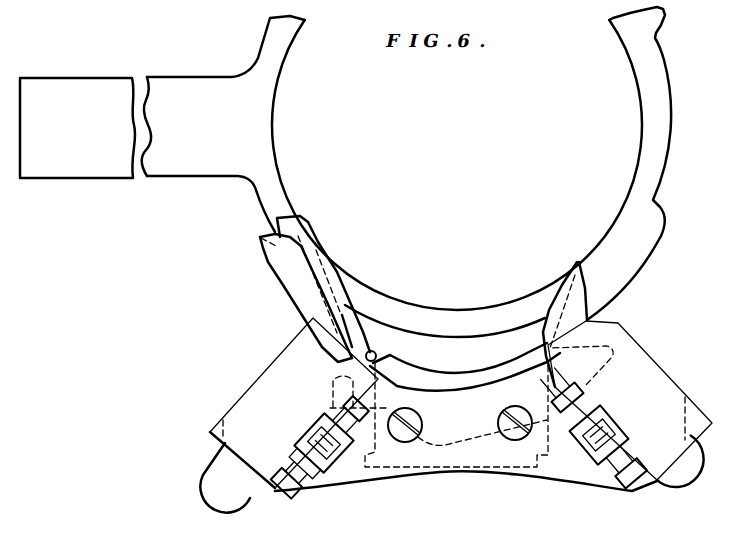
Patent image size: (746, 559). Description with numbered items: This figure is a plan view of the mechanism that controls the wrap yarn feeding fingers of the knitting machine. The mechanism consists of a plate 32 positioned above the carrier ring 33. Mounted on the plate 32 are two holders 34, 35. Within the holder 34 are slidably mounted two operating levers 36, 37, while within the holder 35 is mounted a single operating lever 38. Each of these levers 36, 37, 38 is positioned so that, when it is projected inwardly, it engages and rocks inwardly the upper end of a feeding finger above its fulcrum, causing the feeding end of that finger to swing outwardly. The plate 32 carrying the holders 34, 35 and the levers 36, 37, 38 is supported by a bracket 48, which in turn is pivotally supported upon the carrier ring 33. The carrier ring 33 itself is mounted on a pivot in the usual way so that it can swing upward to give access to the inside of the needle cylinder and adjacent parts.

The plate 32 is at (548, 470).
The carrier ring 33 is at (657, 133).
The holder 34 is at (262, 388).
The holder 35 is at (641, 363).
The operating lever 36 is at (305, 276).
The operating lever 37 is at (337, 260).
The operating lever 38 is at (578, 270).
The bracket 48 is at (420, 468).